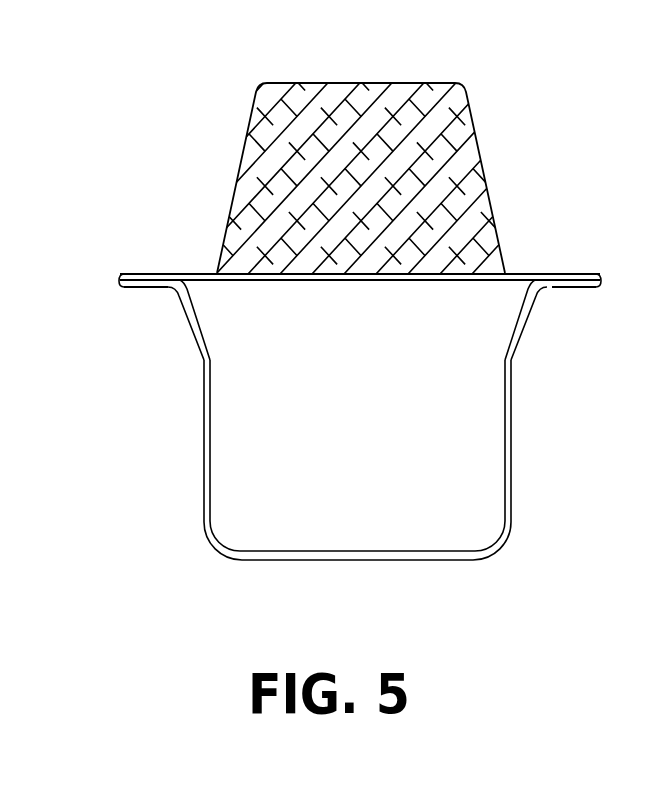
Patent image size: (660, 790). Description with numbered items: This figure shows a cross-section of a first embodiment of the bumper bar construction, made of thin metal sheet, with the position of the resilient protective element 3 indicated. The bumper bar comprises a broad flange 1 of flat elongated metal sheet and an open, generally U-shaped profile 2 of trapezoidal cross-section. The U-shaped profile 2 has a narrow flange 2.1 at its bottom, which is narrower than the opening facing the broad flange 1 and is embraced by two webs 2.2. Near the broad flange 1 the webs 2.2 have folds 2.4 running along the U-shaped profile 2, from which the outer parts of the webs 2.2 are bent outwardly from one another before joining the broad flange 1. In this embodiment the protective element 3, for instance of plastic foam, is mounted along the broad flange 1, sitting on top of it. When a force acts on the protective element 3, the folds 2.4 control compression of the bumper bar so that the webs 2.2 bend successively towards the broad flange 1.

The broad flange 1 is at (367, 275).
The U-shaped profile 2 is at (363, 458).
The narrow flange 2.1 is at (390, 561).
The webs 2.2 is at (203, 430).
The folds 2.4 is at (198, 357).
The protective element 3 is at (466, 122).